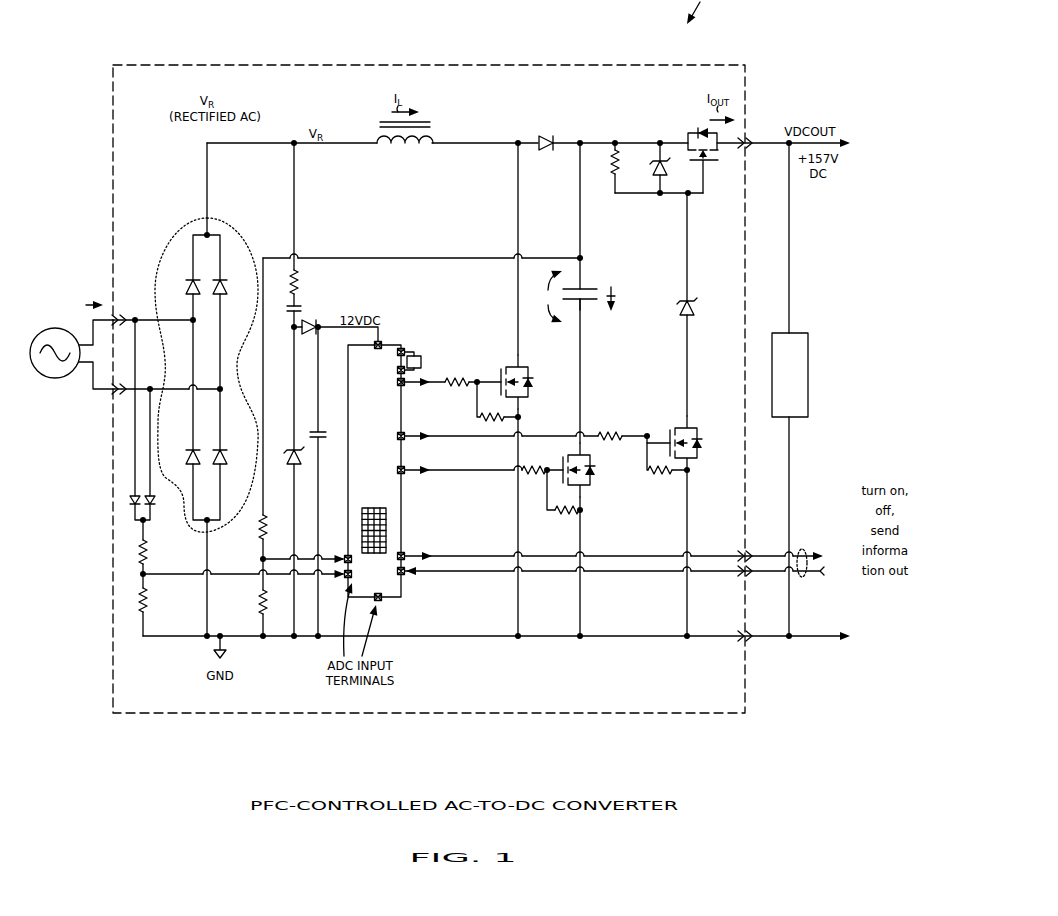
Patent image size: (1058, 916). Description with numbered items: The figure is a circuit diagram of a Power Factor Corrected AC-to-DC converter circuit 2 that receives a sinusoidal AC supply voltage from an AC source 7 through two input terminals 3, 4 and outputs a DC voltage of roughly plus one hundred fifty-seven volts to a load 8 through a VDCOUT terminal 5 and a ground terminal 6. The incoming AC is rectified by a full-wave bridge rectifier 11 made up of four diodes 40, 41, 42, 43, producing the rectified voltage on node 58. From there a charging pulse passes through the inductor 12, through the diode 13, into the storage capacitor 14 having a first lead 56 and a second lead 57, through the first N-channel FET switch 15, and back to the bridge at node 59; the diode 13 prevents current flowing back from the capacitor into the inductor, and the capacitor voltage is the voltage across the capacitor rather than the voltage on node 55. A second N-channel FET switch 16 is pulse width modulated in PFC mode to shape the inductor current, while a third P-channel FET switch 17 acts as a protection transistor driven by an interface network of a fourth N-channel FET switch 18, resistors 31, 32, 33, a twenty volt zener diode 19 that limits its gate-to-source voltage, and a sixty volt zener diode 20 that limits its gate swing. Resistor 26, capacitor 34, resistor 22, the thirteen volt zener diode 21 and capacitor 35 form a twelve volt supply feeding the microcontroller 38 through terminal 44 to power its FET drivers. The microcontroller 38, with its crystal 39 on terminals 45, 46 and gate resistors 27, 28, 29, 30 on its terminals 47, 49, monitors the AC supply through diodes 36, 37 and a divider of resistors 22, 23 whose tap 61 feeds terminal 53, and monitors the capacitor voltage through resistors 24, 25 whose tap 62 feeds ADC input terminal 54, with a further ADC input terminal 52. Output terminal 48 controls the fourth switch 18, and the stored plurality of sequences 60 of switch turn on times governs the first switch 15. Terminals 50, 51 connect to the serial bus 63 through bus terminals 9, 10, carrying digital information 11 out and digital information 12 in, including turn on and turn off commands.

The AC-to-DC converter circuit 2 is at (378, 64).
The input terminal 3 is at (127, 313).
The input terminal 4 is at (123, 405).
The VDCOUT output terminal 5 is at (748, 139).
The ground terminal 6 is at (751, 642).
The AC source 7 is at (56, 328).
The load 8 is at (794, 334).
The serial bus terminal 9 is at (748, 548).
The serial bus terminal 10 is at (751, 577).
The full-wave bridge rectifier 11 is at (731, 548).
The inductor 12 is at (408, 148).
The diode 13 is at (547, 131).
The storage capacitor 14 is at (603, 285).
The first N-channel FET switch Q1 15 is at (595, 486).
The second N-channel FET switch Q2 16 is at (480, 365).
The third P-channel FET switch Q3 17 is at (681, 130).
The fourth N-channel FET switch 18 is at (706, 418).
The 20 volt zener diode 19 is at (669, 172).
The 60 volt zener diode 20 is at (698, 312).
The 13 volt zener diode 21 is at (298, 460).
The resistor 22 is at (152, 549).
The resistor 23 is at (152, 599).
The resistor 24 is at (268, 525).
The resistor 25 is at (268, 600).
The resistor 26 is at (310, 281).
The resistor 27 is at (456, 387).
The resistor 28 is at (473, 417).
The resistor 29 is at (530, 466).
The resistor 30 is at (565, 514).
The resistor 31 is at (613, 162).
The resistor 32 is at (610, 431).
The resistor 33 is at (660, 466).
The capacitor 34 is at (309, 311).
The capacitor 35 is at (314, 430).
The diode 36 is at (132, 497).
The diode 37 is at (155, 501).
The microcontroller 38 is at (374, 471).
The crystal 39 is at (424, 364).
The diode 40 is at (186, 291).
The diode 41 is at (228, 291).
The diode 42 is at (186, 463).
The diode 43 is at (228, 461).
The microcontroller terminal 44 is at (382, 343).
The microcontroller terminal 45 is at (407, 352).
The microcontroller terminal 46 is at (396, 372).
The microcontroller terminal 47 is at (405, 385).
The output terminal 48 is at (405, 439).
The microcontroller terminal 49 is at (405, 473).
The microcontroller terminal 50 is at (404, 556).
The microcontroller terminal 51 is at (406, 574).
The ADC input terminal 52 is at (382, 601).
The microcontroller terminal 53 is at (344, 579).
The ADC input terminal 54 is at (345, 558).
The node 55 is at (596, 140).
The first lead 56 is at (587, 287).
The second lead 57 is at (585, 304).
The node 58 is at (272, 145).
The node 59 is at (455, 630).
The plurality of sequences 60 is at (394, 530).
The tap 61 is at (148, 575).
The tap 62 is at (267, 558).
The bus 63 is at (803, 548).